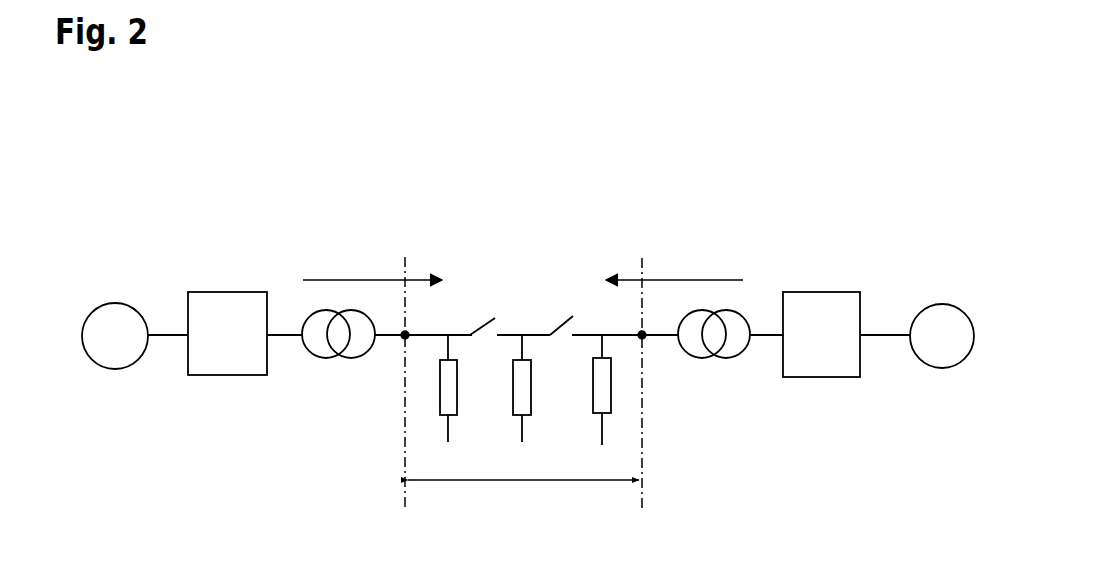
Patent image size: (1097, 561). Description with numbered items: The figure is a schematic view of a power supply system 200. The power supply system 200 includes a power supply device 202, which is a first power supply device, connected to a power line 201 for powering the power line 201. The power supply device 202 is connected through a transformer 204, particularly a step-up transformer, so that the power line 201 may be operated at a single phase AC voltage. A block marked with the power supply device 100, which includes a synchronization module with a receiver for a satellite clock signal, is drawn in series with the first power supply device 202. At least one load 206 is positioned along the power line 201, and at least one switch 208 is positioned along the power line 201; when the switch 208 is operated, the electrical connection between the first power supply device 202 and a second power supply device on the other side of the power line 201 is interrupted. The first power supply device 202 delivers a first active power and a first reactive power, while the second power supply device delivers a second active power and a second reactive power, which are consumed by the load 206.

The power supply device 100 is at (250, 348).
The power supply system 200 is at (160, 225).
The power line 201 is at (474, 208).
The power supply device 202 is at (107, 352).
The transformer 204 is at (333, 365).
The load 206 is at (448, 388).
The switch 208 is at (496, 304).